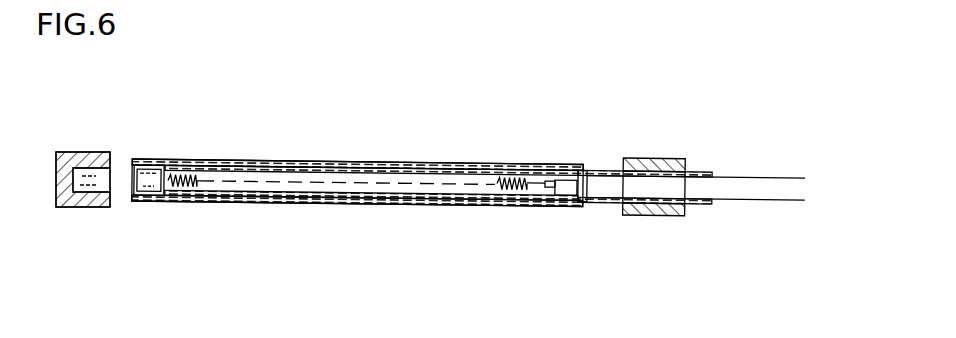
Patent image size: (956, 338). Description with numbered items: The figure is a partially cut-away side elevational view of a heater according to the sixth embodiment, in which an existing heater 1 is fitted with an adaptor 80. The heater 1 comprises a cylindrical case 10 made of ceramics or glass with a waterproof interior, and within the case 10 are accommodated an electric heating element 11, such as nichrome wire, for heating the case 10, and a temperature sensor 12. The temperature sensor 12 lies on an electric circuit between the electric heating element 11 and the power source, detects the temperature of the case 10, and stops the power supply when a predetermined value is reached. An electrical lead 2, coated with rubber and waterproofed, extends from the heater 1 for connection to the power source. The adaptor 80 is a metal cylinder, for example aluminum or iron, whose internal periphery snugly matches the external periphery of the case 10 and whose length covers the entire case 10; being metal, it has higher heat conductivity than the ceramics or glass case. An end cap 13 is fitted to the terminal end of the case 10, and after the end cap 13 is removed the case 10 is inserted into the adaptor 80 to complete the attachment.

The heater 1 is at (190, 216).
The electrical lead 2 is at (762, 200).
The cylindrical case 10 is at (597, 202).
The electric heating element 11 is at (512, 175).
The temperature sensor 12 is at (563, 198).
The end cap 13 is at (80, 207).
The adaptor 80 is at (153, 167).